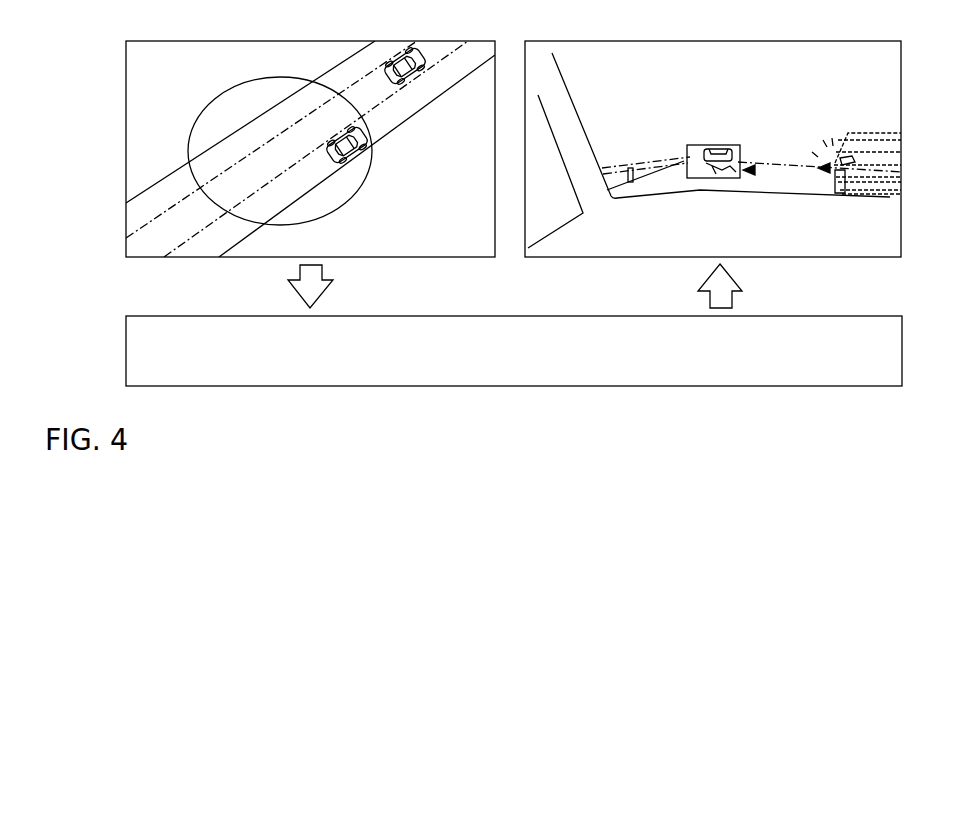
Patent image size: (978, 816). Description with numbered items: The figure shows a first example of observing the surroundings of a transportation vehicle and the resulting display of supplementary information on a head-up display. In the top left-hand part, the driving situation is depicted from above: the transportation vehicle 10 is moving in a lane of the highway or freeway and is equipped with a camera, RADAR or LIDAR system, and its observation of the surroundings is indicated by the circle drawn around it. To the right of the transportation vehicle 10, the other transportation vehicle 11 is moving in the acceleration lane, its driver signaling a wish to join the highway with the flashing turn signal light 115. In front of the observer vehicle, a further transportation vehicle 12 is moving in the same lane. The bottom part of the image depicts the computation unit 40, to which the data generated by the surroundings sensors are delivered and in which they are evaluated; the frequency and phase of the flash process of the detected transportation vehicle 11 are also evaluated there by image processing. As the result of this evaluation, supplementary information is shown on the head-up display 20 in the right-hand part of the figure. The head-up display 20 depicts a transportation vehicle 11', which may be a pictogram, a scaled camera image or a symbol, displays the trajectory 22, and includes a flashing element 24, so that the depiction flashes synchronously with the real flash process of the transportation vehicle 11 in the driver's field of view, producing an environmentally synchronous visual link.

The transportation vehicle 10 is at (335, 212).
The other transportation vehicle 11 is at (614, 147).
The further transportation vehicle 12 is at (417, 74).
The head-up display 20 is at (697, 146).
The depicted transportation vehicle 11' is at (730, 132).
The trajectory 22 is at (722, 170).
The flashing element 24 is at (738, 176).
The flashing turn signal light 115 is at (850, 160).
The computation unit 40 is at (897, 337).